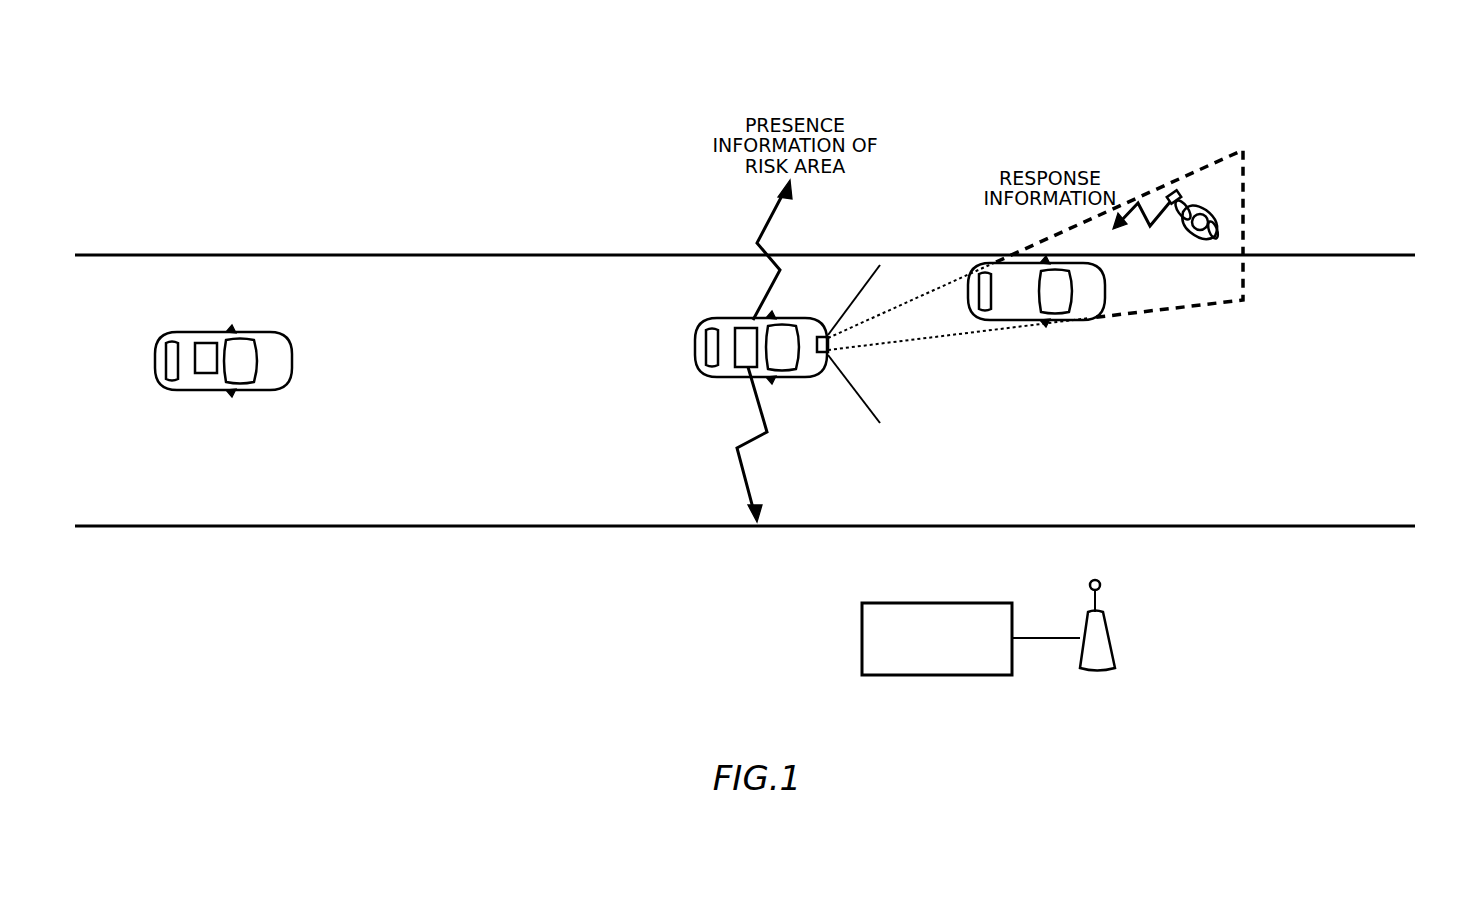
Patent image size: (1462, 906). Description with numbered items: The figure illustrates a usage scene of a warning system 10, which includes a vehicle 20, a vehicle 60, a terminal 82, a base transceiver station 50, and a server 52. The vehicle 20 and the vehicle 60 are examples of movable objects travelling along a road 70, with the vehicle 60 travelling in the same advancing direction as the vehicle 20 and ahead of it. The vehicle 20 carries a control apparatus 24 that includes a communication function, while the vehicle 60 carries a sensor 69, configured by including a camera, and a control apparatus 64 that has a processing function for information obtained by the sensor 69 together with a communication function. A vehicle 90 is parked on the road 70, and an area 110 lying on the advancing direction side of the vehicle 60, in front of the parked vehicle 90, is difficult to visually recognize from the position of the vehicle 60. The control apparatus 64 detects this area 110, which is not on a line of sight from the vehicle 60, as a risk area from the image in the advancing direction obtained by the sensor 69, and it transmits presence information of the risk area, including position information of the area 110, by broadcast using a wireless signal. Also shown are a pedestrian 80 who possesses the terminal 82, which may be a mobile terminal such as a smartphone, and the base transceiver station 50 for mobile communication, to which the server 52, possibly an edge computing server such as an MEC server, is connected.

The warning system 10 is at (1400, 92).
The vehicle 20 is at (160, 367).
The control apparatus 24 is at (202, 374).
The base transceiver station 50 is at (1086, 607).
The server 52 is at (955, 603).
The vehicle 60 is at (694, 355).
The control apparatus 64 is at (744, 368).
The sensor 69 is at (826, 318).
The road 70 is at (183, 513).
The pedestrian 80 is at (1206, 210).
The terminal 82 is at (1176, 193).
The vehicle 90 is at (968, 306).
The area 110 is at (1243, 150).